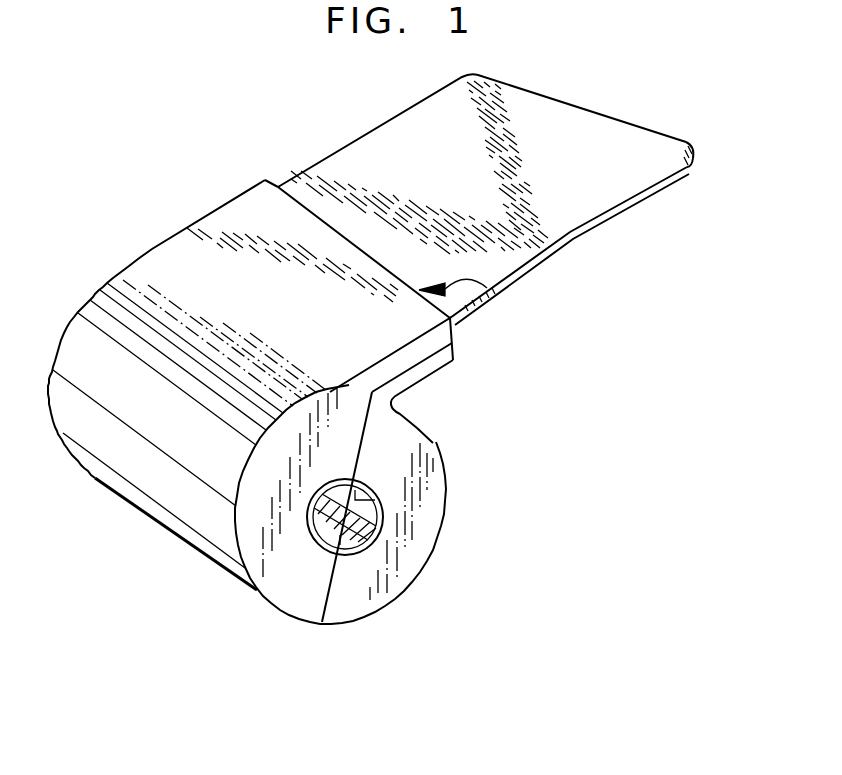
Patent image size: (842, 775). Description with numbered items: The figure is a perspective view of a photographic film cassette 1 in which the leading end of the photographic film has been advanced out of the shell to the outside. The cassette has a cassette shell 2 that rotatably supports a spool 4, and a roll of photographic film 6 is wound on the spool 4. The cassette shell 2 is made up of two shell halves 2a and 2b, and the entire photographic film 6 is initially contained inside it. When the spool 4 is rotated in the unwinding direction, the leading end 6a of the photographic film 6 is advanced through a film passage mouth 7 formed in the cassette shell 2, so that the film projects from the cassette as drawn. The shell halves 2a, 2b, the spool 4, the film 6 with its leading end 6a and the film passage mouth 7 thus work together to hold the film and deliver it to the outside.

The photographic film cassette 1 is at (138, 226).
The cassette shell 2 is at (378, 697).
The shell half 2a is at (297, 612).
The shell half 2b is at (350, 608).
The spool 4 is at (380, 530).
The photographic film 6 is at (323, 128).
The leading end 6a is at (682, 146).
The film passage mouth 7 is at (494, 290).